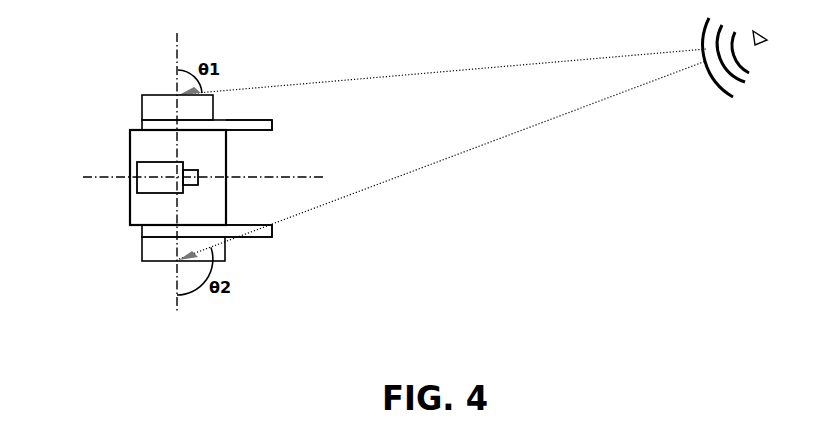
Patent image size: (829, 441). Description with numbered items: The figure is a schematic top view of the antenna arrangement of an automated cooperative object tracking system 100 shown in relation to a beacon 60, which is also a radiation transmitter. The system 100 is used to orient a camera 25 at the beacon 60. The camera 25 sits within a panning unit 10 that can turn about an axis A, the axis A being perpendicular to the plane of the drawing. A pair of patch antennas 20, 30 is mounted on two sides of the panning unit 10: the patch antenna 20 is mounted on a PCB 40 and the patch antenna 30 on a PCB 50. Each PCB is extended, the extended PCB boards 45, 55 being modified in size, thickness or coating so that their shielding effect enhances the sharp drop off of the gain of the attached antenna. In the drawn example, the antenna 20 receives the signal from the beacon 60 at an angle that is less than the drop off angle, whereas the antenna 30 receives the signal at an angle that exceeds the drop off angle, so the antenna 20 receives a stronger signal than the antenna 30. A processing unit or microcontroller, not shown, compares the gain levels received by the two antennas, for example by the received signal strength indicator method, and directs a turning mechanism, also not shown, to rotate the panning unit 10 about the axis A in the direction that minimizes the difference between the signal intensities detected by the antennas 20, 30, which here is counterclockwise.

The panning unit 10 is at (142, 202).
The patch antenna 20 is at (157, 108).
The camera 25 is at (138, 163).
The patch antenna 30 is at (152, 248).
The PCB 40 is at (142, 125).
The extended PCB board 45 is at (242, 117).
The PCB 50 is at (141, 236).
The extended PCB board 55 is at (273, 233).
The beacon 60 is at (762, 45).
The automated cooperative object tracking system 100 is at (274, 288).
The axis A is at (258, 177).